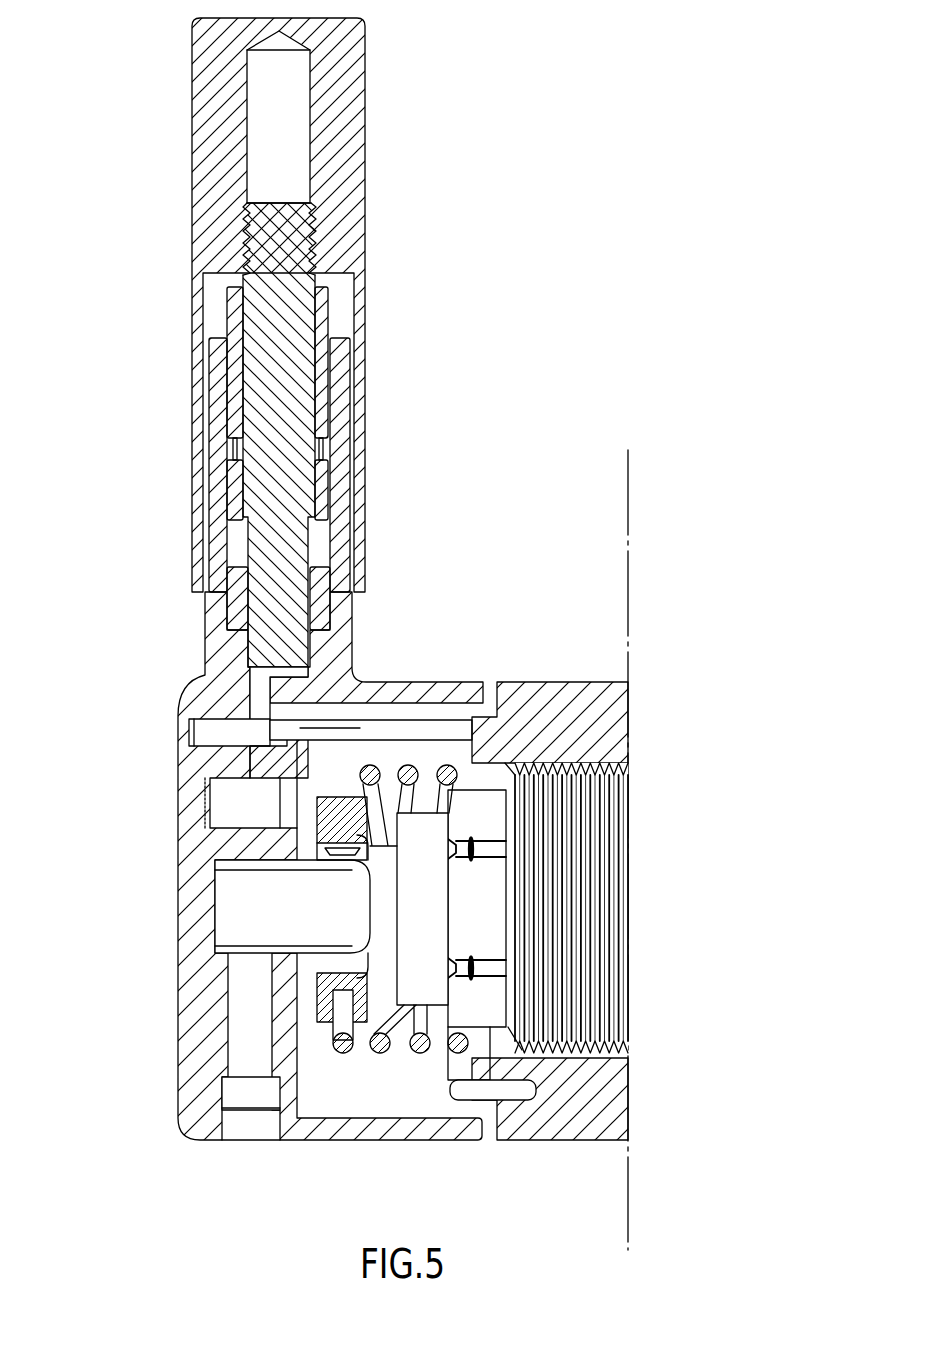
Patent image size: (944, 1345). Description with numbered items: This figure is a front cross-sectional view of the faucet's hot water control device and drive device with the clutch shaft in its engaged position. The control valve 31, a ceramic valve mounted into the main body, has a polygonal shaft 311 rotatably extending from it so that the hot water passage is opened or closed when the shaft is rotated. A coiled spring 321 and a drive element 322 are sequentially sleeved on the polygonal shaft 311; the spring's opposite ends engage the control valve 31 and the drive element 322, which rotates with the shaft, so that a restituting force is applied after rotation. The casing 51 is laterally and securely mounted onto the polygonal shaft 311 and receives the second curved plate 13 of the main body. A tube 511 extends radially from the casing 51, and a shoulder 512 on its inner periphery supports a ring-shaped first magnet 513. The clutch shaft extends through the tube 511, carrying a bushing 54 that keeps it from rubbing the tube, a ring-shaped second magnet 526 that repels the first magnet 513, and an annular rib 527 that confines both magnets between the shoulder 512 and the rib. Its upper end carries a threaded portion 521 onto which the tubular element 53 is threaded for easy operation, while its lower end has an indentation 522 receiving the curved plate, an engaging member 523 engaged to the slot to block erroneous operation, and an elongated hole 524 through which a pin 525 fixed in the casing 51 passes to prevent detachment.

The second curved plate 13 is at (437, 730).
The control valve 31 is at (483, 919).
The polygonal shaft 311 is at (230, 917).
The coiled spring 321 is at (383, 1050).
The drive element 322 is at (360, 1027).
The casing 51 is at (207, 1132).
The tube 511 is at (207, 660).
The shoulder 512 is at (330, 622).
The first magnet 513 is at (228, 612).
The threaded portion 521 is at (313, 232).
The indentation 522 is at (352, 683).
The engaging member 523 is at (255, 766).
The elongated hole 524 is at (255, 703).
The pin 525 is at (190, 738).
The second magnet 526 is at (328, 492).
The annular rib 527 is at (325, 455).
The tubular element 53 is at (368, 108).
The bushing 54 is at (325, 320).